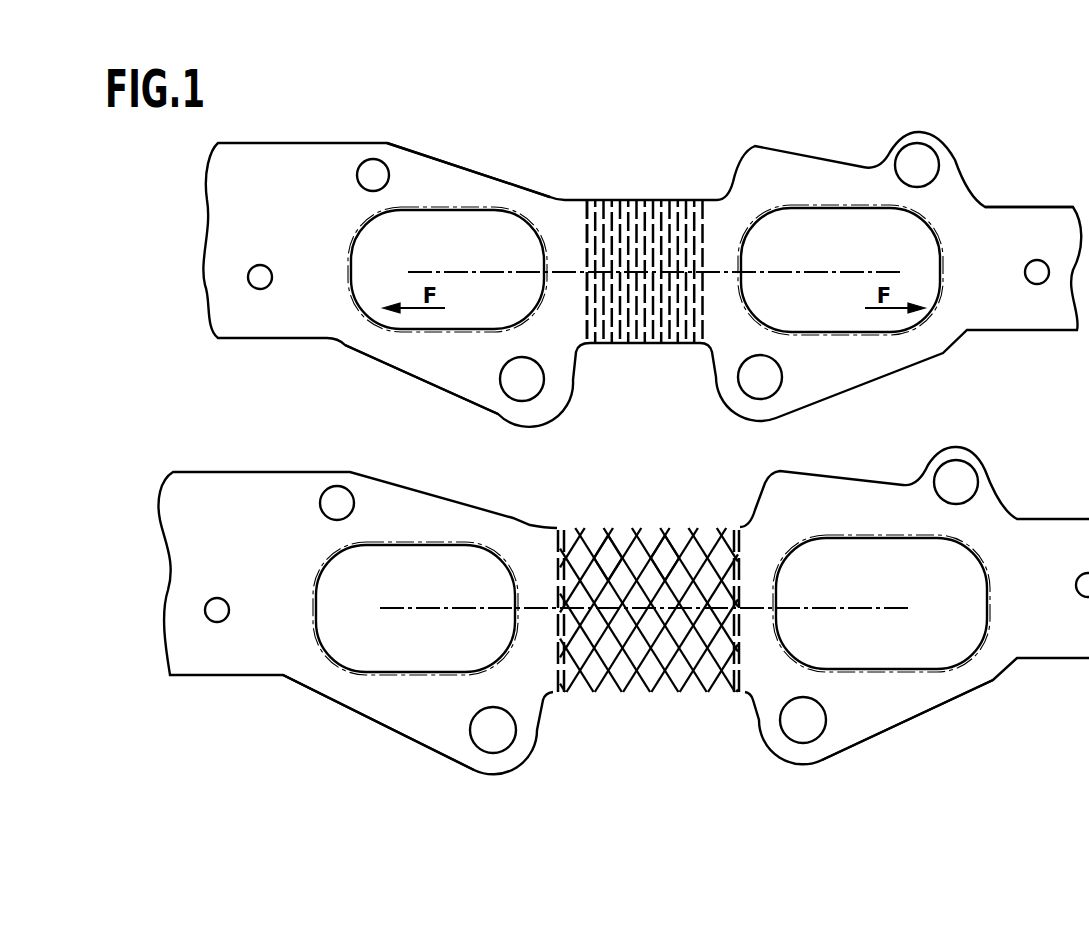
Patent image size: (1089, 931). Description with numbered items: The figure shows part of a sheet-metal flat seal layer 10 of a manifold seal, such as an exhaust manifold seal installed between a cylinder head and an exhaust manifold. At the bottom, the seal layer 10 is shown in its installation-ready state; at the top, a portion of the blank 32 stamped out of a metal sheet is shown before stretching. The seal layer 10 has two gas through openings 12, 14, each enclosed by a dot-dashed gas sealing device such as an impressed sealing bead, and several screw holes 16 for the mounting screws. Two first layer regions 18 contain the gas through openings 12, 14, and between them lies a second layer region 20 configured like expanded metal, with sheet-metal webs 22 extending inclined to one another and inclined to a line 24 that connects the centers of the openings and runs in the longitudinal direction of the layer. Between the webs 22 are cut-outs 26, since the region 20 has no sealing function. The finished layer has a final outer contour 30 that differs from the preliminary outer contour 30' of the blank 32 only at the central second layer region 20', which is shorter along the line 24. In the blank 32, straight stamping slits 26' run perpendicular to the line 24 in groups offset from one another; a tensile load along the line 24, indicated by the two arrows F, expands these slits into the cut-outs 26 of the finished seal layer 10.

The flat seal layer 10 is at (565, 771).
The gas through opening 12 is at (440, 213).
The gas through opening 14 is at (807, 217).
The screw holes 16 is at (375, 167).
The first layer regions 18 is at (480, 192).
The second layer region 20 is at (649, 659).
The second layer region of the blank 20' is at (645, 226).
The sheet-metal webs 22 is at (607, 550).
The line 24 is at (450, 272).
The cut-outs 26 is at (648, 623).
The stamping slits 26' is at (576, 226).
The final outer contour 30 is at (589, 731).
The preliminary outer contour 30' is at (709, 278).
The blank 32 is at (455, 131).